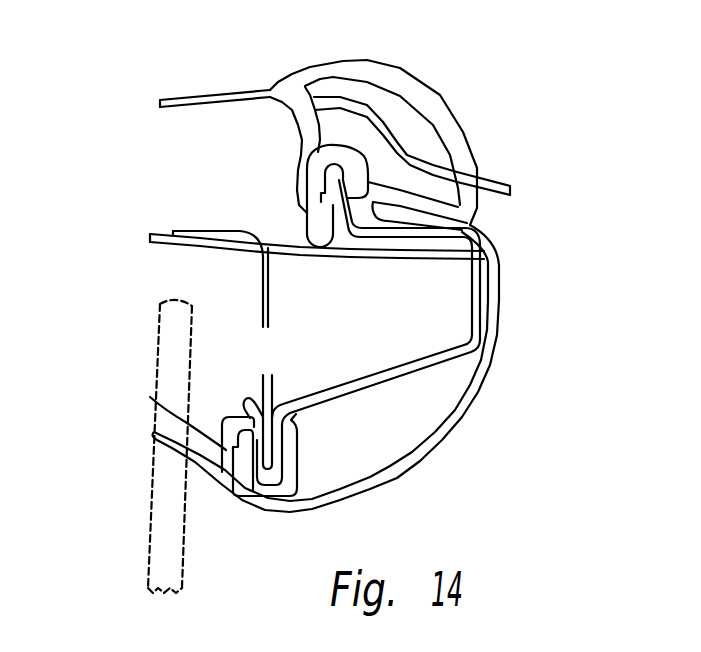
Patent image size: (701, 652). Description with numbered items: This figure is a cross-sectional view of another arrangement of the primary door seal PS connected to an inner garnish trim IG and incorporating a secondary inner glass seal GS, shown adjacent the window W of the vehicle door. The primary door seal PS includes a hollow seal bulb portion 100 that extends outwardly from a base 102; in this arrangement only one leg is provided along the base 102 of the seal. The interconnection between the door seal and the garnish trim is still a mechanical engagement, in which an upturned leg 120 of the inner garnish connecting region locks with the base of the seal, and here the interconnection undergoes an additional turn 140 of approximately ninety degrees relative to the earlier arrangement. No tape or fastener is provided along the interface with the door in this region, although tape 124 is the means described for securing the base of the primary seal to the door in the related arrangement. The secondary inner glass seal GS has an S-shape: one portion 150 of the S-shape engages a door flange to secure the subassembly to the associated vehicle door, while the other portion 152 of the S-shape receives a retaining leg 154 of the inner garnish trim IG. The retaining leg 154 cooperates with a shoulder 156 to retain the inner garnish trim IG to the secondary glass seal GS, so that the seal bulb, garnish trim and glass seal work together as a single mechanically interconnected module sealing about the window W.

The hollow seal bulb portion 100 is at (400, 76).
The base 102 is at (470, 234).
The upturned leg 120 is at (330, 177).
The tape 124 is at (323, 203).
The additional turn 140 is at (352, 242).
The one portion of the S-shape 150 is at (300, 473).
The other portion of the S-shape 152 is at (237, 416).
The retaining leg 154 is at (245, 470).
The shoulder 156 is at (150, 397).
The primary door seal PS is at (487, 122).
The inner garnish trim IG is at (478, 417).
The secondary inner glass seal GS is at (206, 408).
The window W is at (150, 544).